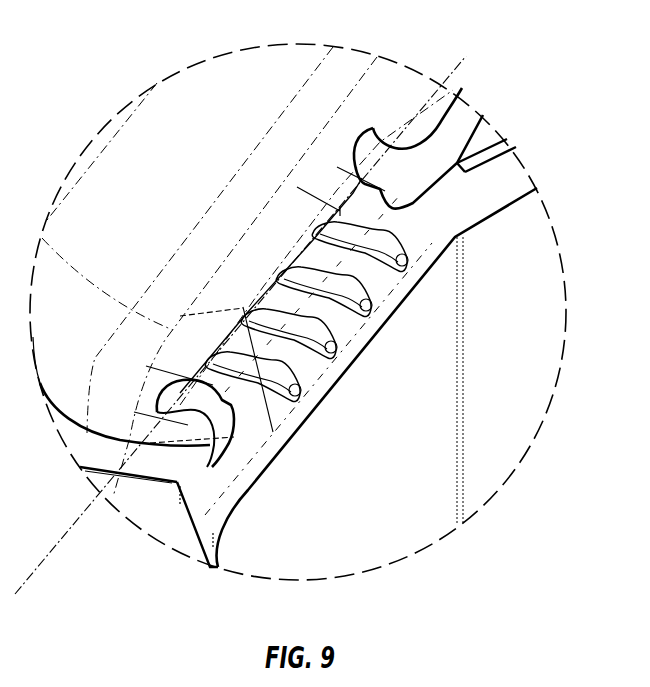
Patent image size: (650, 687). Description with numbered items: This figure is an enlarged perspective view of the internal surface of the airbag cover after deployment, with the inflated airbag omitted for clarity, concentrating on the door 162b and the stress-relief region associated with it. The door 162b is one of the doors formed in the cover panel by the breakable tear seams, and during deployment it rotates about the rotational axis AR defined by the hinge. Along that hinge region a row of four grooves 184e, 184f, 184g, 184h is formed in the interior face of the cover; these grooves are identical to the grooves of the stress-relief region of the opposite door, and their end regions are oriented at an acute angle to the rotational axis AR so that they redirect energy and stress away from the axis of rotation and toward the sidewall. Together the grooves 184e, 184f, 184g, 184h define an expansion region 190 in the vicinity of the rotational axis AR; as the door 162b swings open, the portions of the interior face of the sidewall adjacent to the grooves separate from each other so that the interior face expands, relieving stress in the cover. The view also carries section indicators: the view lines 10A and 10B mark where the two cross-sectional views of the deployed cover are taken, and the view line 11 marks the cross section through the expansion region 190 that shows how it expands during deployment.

The door 162b is at (185, 100).
The expansion region 190 is at (443, 244).
The groove 184e is at (298, 396).
The groove 184f is at (333, 353).
The groove 184g is at (368, 310).
The groove 184h is at (405, 268).
The view line 10A is at (265, 181).
The view line 10B is at (308, 163).
The view line 11 is at (193, 322).
The rotational axis AR is at (247, 315).